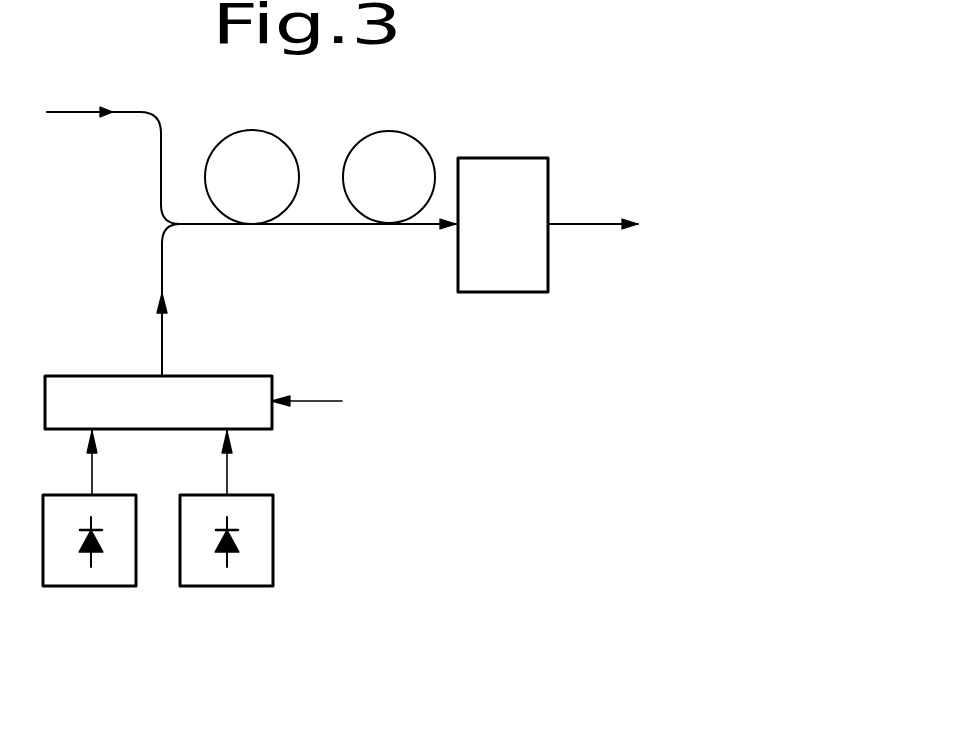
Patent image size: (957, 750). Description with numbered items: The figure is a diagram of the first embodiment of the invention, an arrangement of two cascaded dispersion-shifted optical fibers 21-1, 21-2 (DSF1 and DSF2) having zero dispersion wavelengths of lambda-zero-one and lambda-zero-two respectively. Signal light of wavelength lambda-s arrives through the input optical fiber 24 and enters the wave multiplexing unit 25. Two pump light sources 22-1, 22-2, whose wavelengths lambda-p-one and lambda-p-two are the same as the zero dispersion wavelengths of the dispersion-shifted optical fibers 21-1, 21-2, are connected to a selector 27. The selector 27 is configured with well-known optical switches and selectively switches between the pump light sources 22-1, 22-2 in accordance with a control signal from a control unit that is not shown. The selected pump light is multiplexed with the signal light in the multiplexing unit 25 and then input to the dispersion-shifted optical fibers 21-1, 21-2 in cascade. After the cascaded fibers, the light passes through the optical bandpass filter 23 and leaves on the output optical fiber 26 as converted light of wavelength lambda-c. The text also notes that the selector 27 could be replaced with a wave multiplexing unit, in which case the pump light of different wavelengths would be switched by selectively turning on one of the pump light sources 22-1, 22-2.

The dispersion-shifted optical fiber 21-1 is at (286, 207).
The dispersion-shifted optical fiber 21-2 is at (424, 206).
The pump light source 22-1 is at (62, 587).
The pump light source 22-2 is at (197, 587).
The optical bandpass filter 23 is at (522, 157).
The input optical fiber 24 is at (77, 115).
The wave multiplexing unit 25 is at (166, 224).
The output optical fiber 26 is at (603, 227).
The selector 27 is at (105, 375).